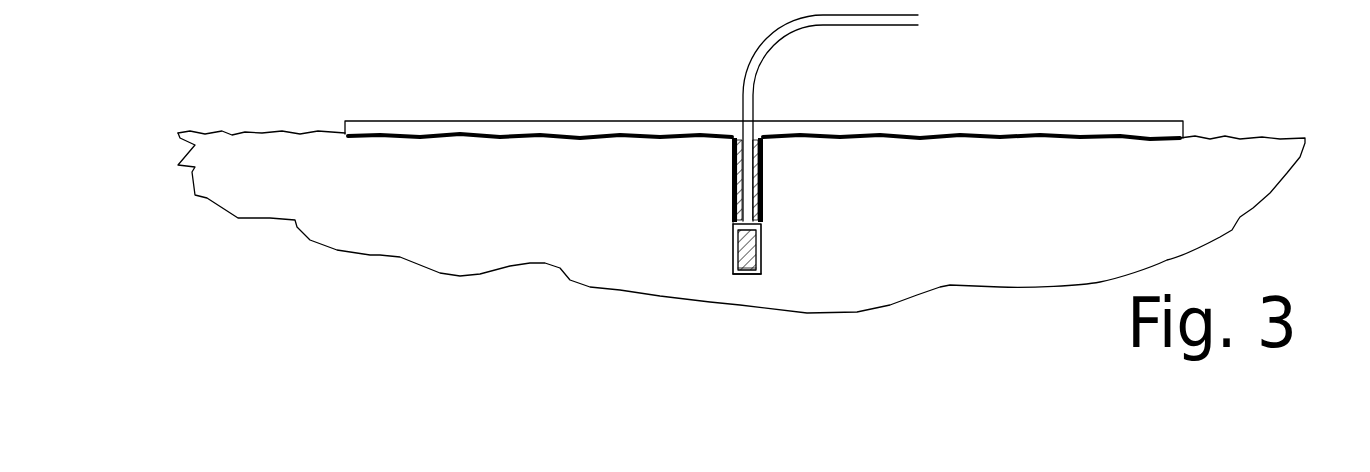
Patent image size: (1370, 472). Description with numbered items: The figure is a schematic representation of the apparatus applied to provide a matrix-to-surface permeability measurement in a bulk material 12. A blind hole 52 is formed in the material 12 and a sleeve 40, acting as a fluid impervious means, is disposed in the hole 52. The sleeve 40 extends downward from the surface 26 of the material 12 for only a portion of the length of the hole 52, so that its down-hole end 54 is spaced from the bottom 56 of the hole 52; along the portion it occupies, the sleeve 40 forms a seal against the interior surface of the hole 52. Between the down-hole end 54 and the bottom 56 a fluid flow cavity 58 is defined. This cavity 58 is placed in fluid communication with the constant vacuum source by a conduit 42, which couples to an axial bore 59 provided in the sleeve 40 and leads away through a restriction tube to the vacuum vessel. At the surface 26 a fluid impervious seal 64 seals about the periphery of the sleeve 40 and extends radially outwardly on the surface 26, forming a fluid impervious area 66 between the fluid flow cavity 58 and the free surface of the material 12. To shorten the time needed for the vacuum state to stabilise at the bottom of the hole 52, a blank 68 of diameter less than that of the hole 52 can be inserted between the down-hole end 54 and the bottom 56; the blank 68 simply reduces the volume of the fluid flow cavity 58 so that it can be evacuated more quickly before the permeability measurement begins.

The material 12 is at (952, 279).
The surface 26 is at (288, 132).
The sleeve 40 is at (715, 194).
The conduit 42 is at (765, 65).
The blind hole 52 is at (733, 223).
The down-hole end 54 is at (731, 254).
The bottom 56 is at (753, 276).
The fluid flow cavity 58 is at (758, 250).
The axial bore 59 is at (762, 222).
The seal 64 is at (465, 120).
The fluid impervious area 66 is at (352, 140).
The blank 68 is at (746, 262).